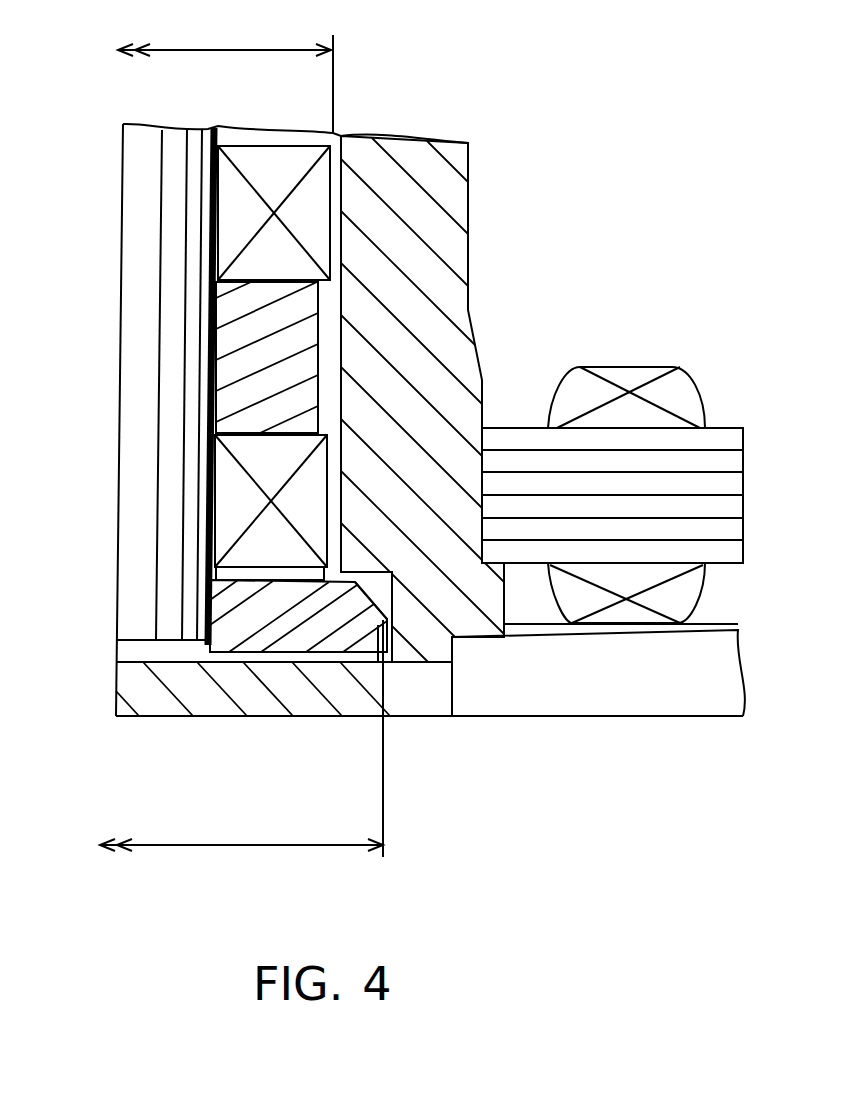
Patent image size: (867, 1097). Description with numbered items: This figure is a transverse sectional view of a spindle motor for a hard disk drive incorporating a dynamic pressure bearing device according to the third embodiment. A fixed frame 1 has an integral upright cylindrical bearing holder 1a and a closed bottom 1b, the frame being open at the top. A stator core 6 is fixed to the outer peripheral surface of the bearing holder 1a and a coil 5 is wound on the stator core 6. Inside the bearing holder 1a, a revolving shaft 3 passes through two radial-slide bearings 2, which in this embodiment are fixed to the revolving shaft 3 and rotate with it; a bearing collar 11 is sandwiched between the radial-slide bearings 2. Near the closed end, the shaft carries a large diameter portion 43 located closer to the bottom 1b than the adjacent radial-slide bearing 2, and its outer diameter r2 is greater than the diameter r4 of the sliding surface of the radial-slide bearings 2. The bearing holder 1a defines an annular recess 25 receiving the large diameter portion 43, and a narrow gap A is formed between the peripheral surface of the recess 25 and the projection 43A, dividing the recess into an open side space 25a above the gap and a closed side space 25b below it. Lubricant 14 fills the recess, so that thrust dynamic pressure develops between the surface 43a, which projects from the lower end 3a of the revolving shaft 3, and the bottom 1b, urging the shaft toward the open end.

The frame 1 is at (408, 799).
The bearing holder 1a is at (447, 290).
The bottom of the frame 1b is at (158, 693).
The radial-slide bearing 2 is at (274, 146).
The revolving shaft 3 is at (135, 380).
The lower end of the revolving shaft 3a is at (138, 643).
The coil 5 is at (688, 397).
The stator core 6 is at (728, 488).
The bearing collar 11 is at (220, 319).
The lubricant 14 is at (257, 575).
The annular recess 25 is at (452, 647).
The open side space 25a is at (365, 573).
The closed side space 25b is at (377, 630).
The large diameter portion 43 is at (292, 642).
The surface of the large diameter portion 43a is at (237, 648).
The projection of the large diameter portion 43A is at (387, 655).
The narrow gap A is at (398, 602).
The outer diameter of the large diameter portion r2 is at (241, 738).
The diameter of the sliding surface of the radial-slide bearings r4 is at (225, 75).